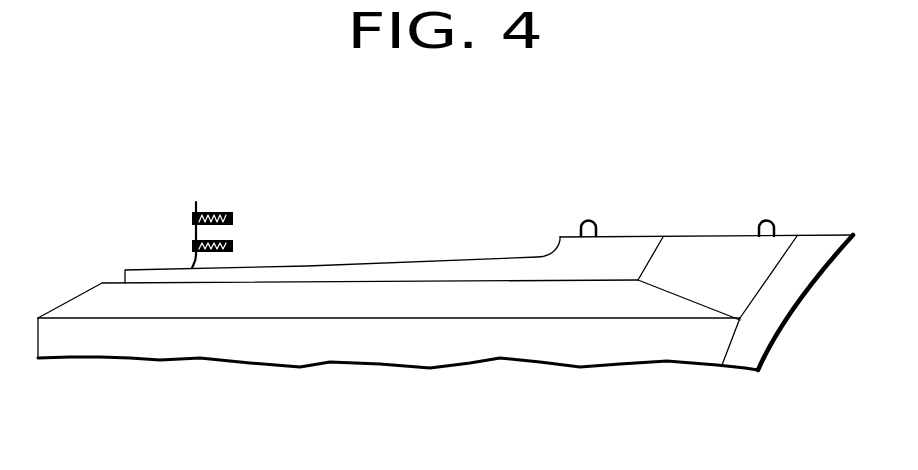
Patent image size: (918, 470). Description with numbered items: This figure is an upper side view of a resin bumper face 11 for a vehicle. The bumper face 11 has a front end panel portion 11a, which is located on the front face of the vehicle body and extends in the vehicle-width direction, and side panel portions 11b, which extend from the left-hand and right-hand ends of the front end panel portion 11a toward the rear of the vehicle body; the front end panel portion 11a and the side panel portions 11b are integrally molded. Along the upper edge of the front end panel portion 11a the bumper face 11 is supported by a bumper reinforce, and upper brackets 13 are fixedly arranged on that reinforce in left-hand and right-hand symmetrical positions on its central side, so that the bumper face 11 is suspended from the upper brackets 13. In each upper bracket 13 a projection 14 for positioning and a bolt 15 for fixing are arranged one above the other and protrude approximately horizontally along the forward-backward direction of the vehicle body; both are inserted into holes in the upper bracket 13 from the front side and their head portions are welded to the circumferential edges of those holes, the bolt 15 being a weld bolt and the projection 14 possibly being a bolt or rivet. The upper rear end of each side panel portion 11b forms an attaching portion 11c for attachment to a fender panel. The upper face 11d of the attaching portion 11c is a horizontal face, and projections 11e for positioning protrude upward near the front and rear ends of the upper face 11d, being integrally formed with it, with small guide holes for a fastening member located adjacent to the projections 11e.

The bumper face 11 is at (86, 289).
The front end panel portion 11a is at (147, 267).
The side panel portion 11b is at (672, 338).
The attaching portion 11c is at (727, 272).
The upper face 11d is at (690, 235).
The projection for positioning 11e is at (590, 221).
The upper bracket 13 is at (197, 202).
The projection for positioning 14 is at (233, 246).
The bolt for fixing 15 is at (233, 217).